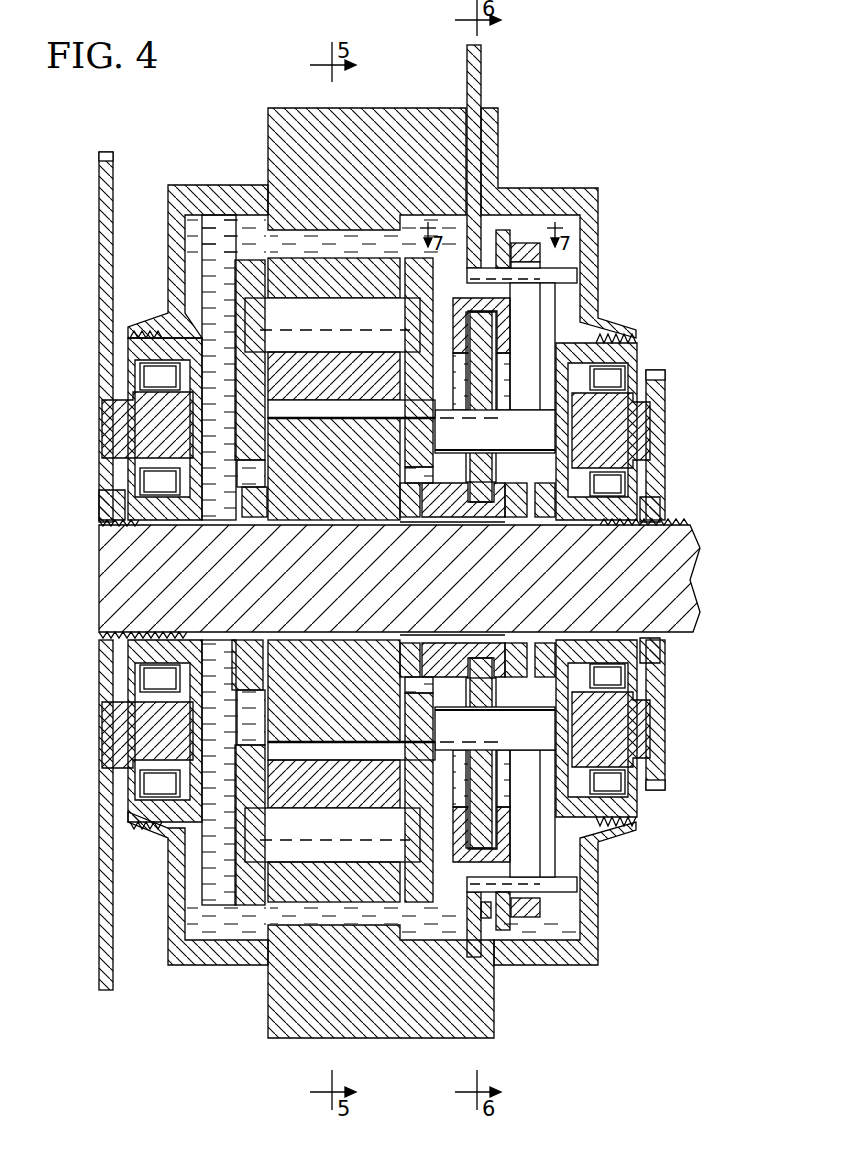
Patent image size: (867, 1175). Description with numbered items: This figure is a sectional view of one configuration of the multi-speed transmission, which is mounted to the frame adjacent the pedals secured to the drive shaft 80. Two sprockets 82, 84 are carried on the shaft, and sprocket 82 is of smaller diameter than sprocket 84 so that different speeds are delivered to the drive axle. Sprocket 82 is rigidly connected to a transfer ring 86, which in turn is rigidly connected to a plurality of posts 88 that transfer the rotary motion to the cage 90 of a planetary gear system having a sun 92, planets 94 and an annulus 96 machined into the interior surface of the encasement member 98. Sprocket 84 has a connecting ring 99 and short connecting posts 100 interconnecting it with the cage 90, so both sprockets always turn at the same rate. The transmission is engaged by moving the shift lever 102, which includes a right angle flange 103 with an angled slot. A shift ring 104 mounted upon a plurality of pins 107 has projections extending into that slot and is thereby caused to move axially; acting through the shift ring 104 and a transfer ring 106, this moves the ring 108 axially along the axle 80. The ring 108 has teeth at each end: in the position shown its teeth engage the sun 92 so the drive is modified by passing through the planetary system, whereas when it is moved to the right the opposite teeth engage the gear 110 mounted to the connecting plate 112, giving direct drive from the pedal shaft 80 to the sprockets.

The drive shaft 80 is at (675, 545).
The sprocket 82 is at (652, 402).
The sprocket 84 is at (99, 238).
The transfer ring 86 is at (628, 448).
The posts 88 is at (518, 410).
The cage 90 is at (410, 290).
The sun 92 is at (248, 492).
The planets 94 is at (275, 265).
The annulus 96 is at (268, 148).
The encasement member 98 is at (583, 120).
The connecting ring 99 is at (118, 718).
The connecting posts 100 is at (215, 745).
The shift lever 102 is at (481, 74).
The right angle flange 103 is at (527, 247).
The shift ring 104 is at (508, 322).
The transfer ring 106 is at (478, 372).
The pins 107 is at (575, 280).
The ring 108 is at (450, 485).
The gear 110 is at (538, 485).
The connecting plate 112 is at (556, 345).